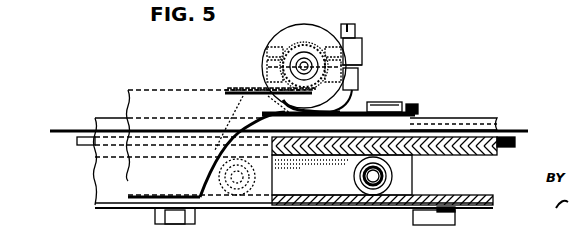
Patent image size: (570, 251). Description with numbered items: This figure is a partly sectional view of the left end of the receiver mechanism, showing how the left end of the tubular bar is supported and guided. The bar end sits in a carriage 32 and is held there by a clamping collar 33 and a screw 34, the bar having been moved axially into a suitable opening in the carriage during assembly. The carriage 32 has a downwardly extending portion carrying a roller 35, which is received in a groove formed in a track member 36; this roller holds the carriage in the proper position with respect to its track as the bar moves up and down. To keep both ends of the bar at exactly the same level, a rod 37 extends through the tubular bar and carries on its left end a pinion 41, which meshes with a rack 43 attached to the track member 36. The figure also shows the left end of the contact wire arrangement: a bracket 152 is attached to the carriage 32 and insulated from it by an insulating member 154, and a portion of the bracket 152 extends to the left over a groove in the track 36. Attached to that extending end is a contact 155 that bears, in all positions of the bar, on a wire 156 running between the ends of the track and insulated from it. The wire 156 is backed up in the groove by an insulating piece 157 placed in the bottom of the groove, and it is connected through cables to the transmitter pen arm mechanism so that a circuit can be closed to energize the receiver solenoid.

The carriage 32 is at (333, 110).
The clamping collar 33 is at (363, 55).
The screw 34 is at (355, 30).
The roller 35 is at (392, 176).
The track member 36 is at (470, 119).
The rod 37 is at (306, 58).
The pinion 41 is at (297, 46).
The rack 43 is at (240, 93).
The bracket 152 is at (412, 105).
The insulating member 154 is at (382, 103).
The contact 155 is at (300, 164).
The wire 156 is at (524, 130).
The insulating piece 157 is at (518, 142).